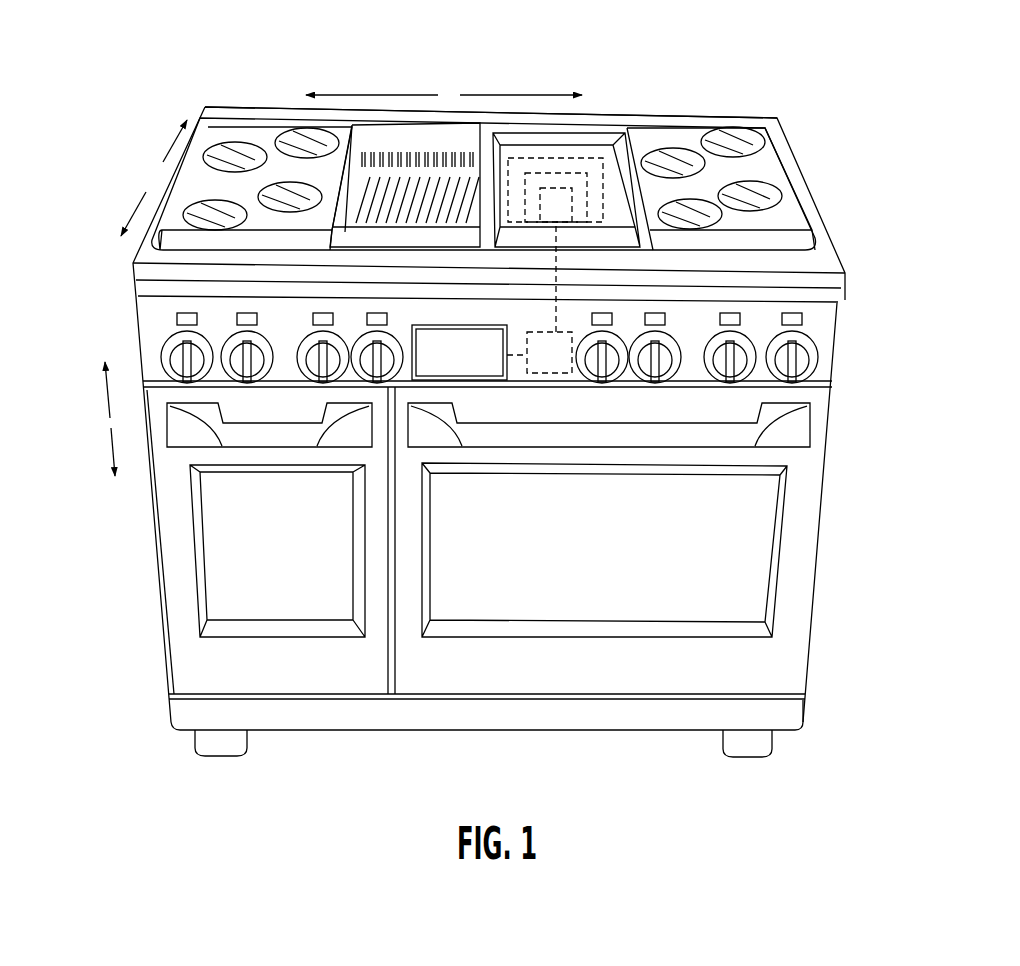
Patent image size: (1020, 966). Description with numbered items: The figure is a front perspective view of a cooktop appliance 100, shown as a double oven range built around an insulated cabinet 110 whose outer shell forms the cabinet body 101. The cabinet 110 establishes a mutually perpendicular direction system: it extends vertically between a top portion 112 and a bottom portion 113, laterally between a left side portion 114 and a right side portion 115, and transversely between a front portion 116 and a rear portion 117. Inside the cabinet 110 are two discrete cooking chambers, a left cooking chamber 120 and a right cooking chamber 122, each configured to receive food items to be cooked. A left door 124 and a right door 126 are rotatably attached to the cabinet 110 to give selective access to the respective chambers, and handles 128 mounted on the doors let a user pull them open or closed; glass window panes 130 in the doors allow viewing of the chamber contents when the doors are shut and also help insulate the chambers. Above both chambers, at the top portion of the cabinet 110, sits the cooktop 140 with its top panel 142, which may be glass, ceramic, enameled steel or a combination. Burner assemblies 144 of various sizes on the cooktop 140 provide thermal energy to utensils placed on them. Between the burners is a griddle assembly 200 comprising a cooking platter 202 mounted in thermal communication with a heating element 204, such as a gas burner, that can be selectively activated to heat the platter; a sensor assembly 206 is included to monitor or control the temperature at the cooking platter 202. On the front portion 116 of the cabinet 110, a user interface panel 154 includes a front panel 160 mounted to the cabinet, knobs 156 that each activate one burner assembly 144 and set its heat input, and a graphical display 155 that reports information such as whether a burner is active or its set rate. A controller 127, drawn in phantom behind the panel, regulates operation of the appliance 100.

The cooktop appliance 100 is at (853, 173).
The cabinet 101 is at (828, 260).
The cabinet 110 is at (802, 173).
The top portion 112 is at (583, 127).
The bottom portion 113 is at (447, 734).
The left side portion 114 is at (155, 647).
The right side portion 115 is at (813, 653).
The front portion 116 is at (813, 377).
The rear portion 117 is at (289, 103).
The left cooking chamber 120 is at (237, 545).
The right cooking chamber 122 is at (721, 518).
The left door 124 is at (173, 573).
The right door 126 is at (805, 480).
The controller 127 is at (557, 373).
The handle 128 is at (213, 438).
The glass window pane 130 is at (218, 520).
The cooktop 140 is at (327, 168).
The top panel 142 is at (779, 223).
The burner assembly 144 is at (777, 118).
The user interface panel 154 is at (97, 317).
The graphical display 155 is at (423, 363).
The knob 156 is at (810, 343).
The front panel 160 is at (825, 360).
The griddle assembly 200 is at (550, 136).
The cooking platter 202 is at (613, 150).
The heating element 204 is at (517, 158).
The sensor assembly 206 is at (570, 208).